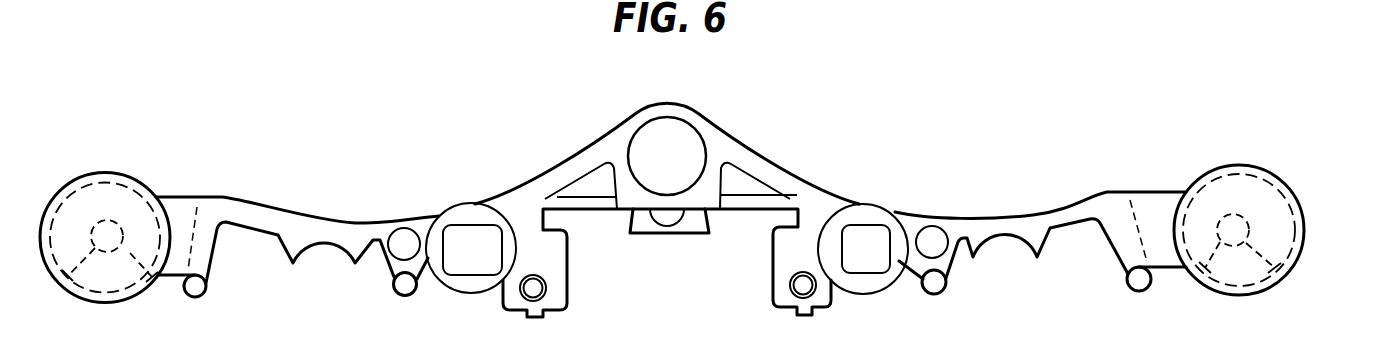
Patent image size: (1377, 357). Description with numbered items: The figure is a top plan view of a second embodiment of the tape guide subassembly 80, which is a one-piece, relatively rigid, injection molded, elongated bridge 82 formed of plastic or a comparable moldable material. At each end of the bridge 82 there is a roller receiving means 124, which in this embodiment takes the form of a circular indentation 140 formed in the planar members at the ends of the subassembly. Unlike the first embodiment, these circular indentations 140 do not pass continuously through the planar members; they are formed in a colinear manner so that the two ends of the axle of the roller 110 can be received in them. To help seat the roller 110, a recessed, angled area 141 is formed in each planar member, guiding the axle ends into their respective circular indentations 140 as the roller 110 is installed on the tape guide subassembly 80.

The tape guide subassembly 80 is at (398, 106).
The bridge 82 is at (717, 143).
The roller 110 is at (104, 185).
The roller receiving means 124 is at (125, 198).
The circular indentation 140 is at (101, 222).
The recessed, angled area 141 is at (134, 272).